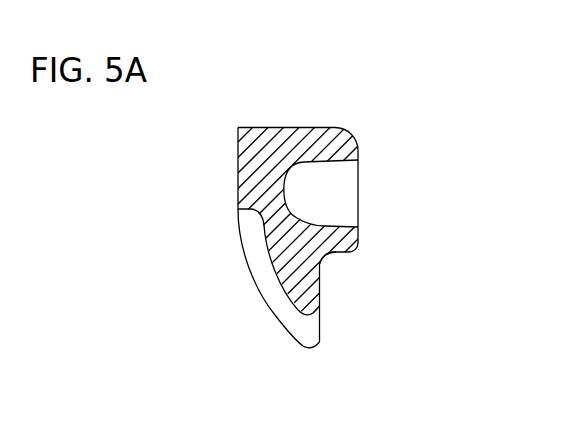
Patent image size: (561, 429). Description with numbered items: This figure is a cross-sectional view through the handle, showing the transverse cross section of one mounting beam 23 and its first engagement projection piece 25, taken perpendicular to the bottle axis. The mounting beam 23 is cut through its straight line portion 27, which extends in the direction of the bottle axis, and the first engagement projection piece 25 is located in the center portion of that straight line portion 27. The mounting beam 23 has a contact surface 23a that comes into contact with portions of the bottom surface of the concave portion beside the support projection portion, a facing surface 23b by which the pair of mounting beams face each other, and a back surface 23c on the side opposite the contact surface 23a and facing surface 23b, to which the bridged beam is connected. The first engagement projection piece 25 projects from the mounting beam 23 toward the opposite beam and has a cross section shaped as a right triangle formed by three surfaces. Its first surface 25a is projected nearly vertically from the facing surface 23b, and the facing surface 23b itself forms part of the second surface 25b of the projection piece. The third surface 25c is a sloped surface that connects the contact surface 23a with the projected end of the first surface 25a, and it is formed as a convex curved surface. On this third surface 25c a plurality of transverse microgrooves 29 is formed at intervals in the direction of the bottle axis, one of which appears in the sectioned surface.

The mounting beam 23 is at (383, 101).
The contact surface 23a is at (238, 160).
The facing surface 23b is at (339, 254).
The back surface 23c is at (358, 191).
The first engagement projection piece 25 is at (228, 252).
The first surface 25a is at (321, 292).
The second surface 25b is at (409, 271).
The third surface 25c is at (256, 287).
The straight line portion 27 is at (294, 118).
The transverse microgrooves 29 is at (269, 313).